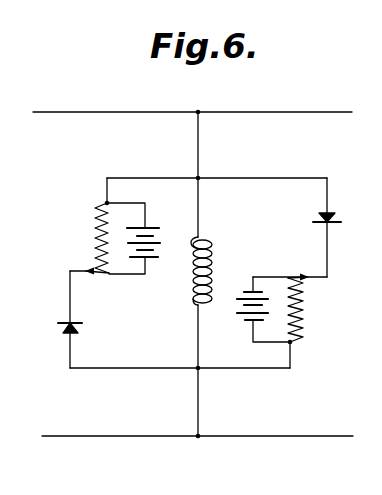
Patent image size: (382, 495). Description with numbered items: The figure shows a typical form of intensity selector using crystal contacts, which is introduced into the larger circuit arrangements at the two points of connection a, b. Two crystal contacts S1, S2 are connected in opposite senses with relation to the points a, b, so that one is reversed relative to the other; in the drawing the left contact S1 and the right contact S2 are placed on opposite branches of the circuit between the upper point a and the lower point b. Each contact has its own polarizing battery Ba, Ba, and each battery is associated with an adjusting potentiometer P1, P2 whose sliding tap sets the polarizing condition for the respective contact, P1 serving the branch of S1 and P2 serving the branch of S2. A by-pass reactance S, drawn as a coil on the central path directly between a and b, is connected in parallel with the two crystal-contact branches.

The point of connection a is at (192, 96).
The point of connection b is at (197, 453).
The by-pass reactance S is at (214, 271).
The adjusting potentiometer P1 is at (84, 226).
The adjusting potentiometer P2 is at (291, 321).
The polarizing battery Ba is at (198, 272).
The crystal contact S1 is at (81, 319).
The crystal contact S2 is at (342, 227).